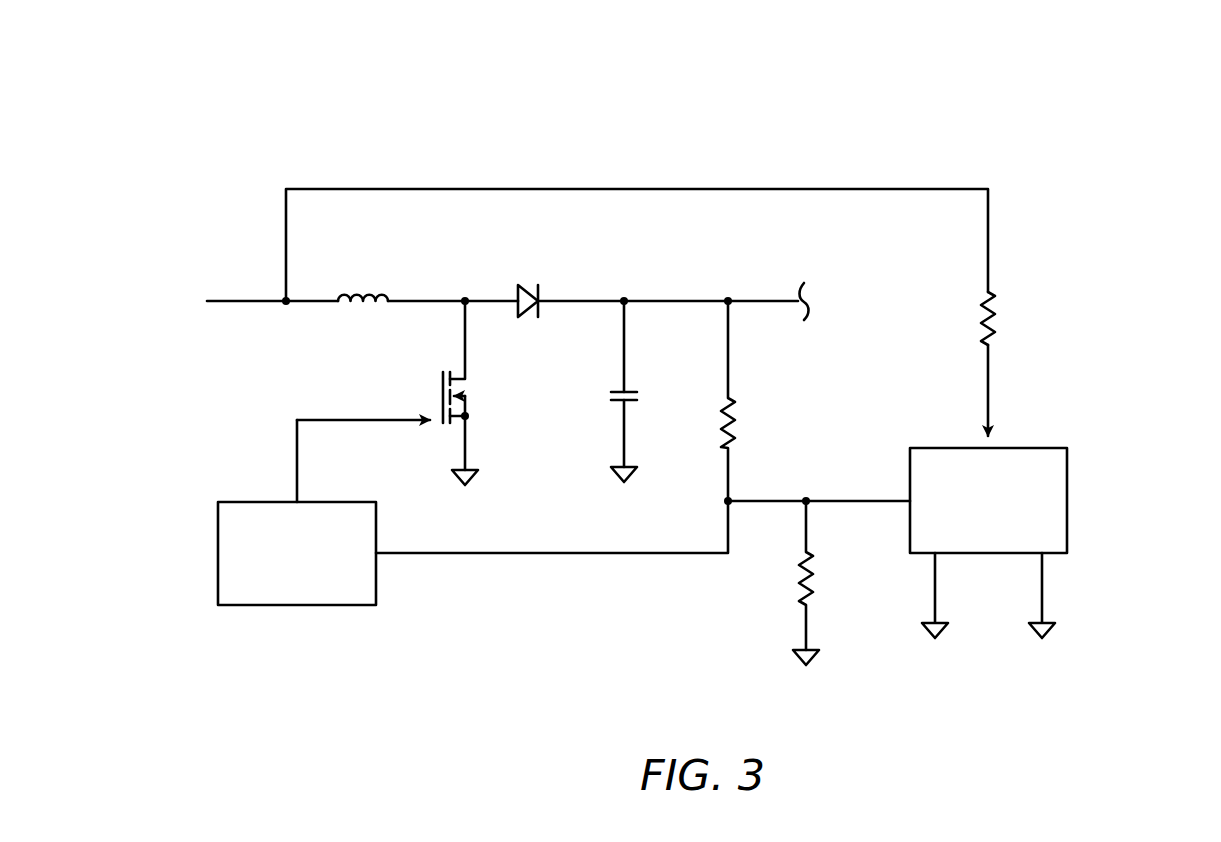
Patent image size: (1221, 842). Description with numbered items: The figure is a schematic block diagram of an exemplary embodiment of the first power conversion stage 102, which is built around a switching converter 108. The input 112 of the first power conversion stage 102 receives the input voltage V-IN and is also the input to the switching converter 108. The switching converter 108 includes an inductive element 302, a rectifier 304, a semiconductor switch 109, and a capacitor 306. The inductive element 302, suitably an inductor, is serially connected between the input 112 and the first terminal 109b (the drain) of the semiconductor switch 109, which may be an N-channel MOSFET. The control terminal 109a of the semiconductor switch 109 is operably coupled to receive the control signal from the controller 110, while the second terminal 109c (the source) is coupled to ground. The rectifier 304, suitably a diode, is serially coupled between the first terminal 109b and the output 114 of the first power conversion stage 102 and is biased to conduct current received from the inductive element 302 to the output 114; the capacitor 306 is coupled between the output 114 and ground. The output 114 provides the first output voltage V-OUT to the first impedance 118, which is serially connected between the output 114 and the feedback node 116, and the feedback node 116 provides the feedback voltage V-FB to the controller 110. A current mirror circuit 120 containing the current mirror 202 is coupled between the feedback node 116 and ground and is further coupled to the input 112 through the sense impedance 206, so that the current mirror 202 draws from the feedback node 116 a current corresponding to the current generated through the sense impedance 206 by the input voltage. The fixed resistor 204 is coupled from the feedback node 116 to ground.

The first power conversion stage 102 is at (1023, 109).
The switching converter 108 is at (554, 590).
The semiconductor switch 109 is at (451, 401).
The control terminal 109a is at (437, 424).
The first terminal 109b is at (462, 378).
The second terminal 109c is at (468, 417).
The controller 110 is at (307, 607).
The input 112 is at (252, 300).
The output 114 is at (728, 298).
The feedback node 116 is at (728, 501).
The first impedance 118 is at (736, 410).
The current mirror circuit 120 is at (1058, 543).
The current mirror 202 is at (1068, 527).
The fixed resistor 204 is at (815, 568).
The sense impedance 206 is at (996, 307).
The inductive element 302 is at (368, 288).
The rectifier 304 is at (522, 285).
The capacitor 306 is at (637, 402).